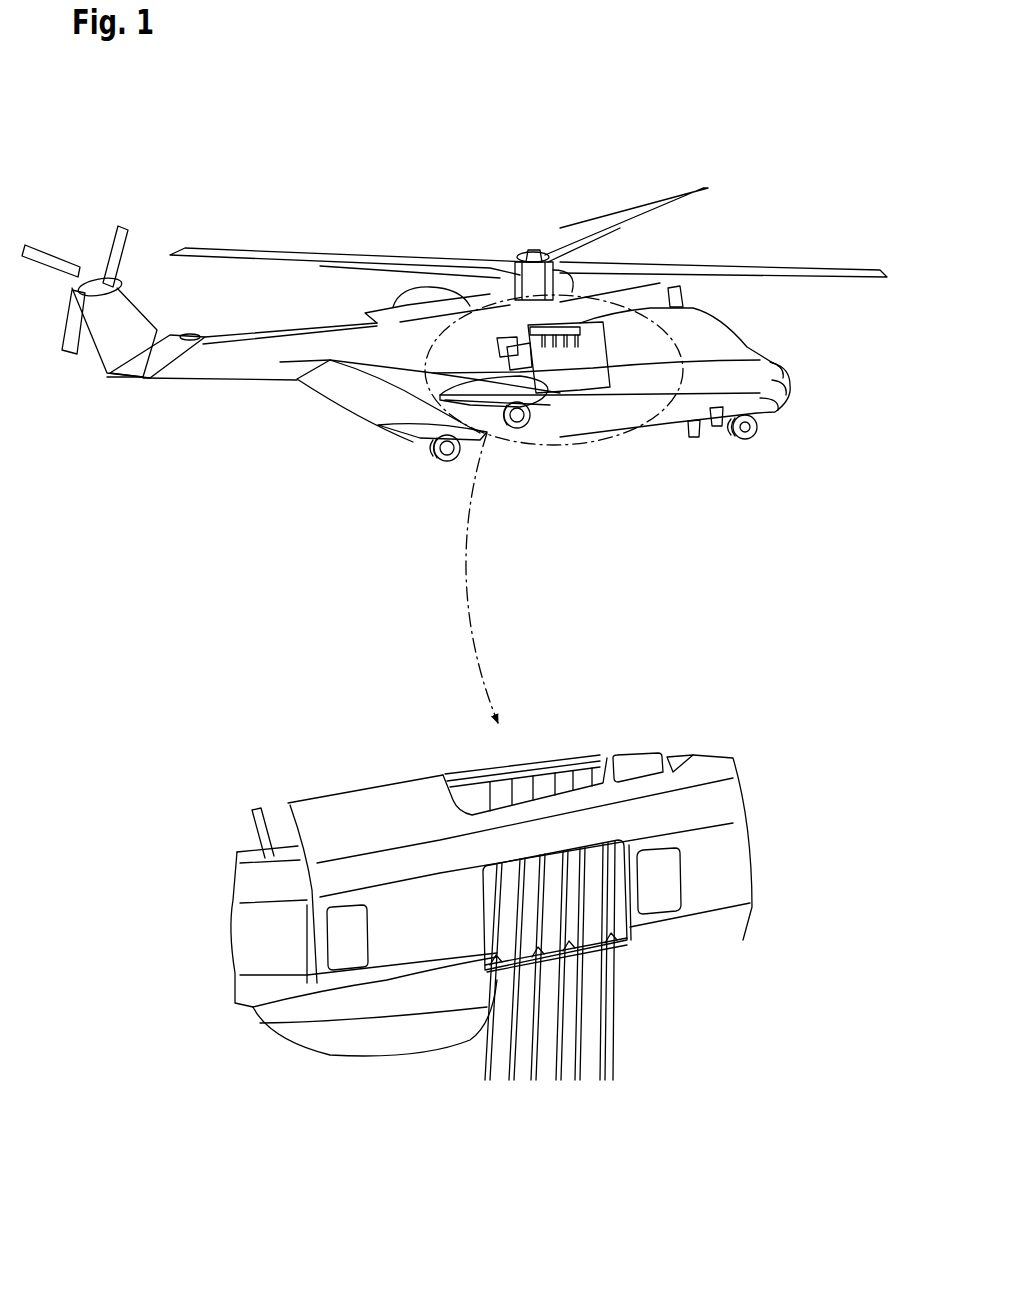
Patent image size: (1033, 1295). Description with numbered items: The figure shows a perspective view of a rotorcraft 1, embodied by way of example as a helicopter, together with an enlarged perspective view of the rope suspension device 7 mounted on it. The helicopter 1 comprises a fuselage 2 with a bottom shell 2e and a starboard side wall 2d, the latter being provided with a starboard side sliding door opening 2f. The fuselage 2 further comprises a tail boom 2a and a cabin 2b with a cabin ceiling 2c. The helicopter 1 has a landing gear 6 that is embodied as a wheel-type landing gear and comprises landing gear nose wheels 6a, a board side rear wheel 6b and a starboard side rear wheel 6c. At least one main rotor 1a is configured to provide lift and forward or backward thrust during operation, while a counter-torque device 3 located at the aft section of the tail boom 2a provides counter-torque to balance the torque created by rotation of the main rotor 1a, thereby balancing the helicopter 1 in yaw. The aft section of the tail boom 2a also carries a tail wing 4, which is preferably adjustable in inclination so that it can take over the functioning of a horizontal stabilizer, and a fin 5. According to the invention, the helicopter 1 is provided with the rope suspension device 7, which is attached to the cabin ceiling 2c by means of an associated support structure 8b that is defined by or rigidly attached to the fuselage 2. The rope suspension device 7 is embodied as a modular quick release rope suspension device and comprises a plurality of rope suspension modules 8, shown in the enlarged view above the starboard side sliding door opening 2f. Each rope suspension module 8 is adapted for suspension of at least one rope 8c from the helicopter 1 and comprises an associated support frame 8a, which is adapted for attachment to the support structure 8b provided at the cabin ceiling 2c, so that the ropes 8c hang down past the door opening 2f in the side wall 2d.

The rotorcraft 1 is at (670, 150).
The main rotor 1a is at (580, 252).
The fuselage 2 is at (693, 337).
The tail boom 2a is at (288, 347).
The cabin 2b is at (600, 362).
The cabin ceiling 2c is at (577, 347).
The starboard side wall 2d is at (650, 355).
The bottom shell 2e is at (673, 430).
The starboard side sliding door opening 2f is at (578, 327).
The counter-torque device 3 is at (90, 243).
The tail wing 4 is at (172, 347).
The fin 5 is at (113, 333).
The landing gear 6 is at (442, 465).
The landing gear nose wheels 6a is at (750, 442).
The board side rear wheel 6b is at (430, 450).
The starboard side rear wheel 6c is at (535, 437).
The rope suspension device 7 is at (512, 320).
The rope suspension module 8 is at (531, 268).
The support frame 8a is at (490, 775).
The support structure 8b is at (623, 765).
The rope 8c is at (575, 1095).